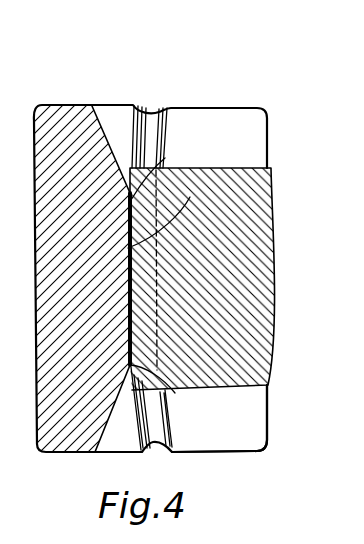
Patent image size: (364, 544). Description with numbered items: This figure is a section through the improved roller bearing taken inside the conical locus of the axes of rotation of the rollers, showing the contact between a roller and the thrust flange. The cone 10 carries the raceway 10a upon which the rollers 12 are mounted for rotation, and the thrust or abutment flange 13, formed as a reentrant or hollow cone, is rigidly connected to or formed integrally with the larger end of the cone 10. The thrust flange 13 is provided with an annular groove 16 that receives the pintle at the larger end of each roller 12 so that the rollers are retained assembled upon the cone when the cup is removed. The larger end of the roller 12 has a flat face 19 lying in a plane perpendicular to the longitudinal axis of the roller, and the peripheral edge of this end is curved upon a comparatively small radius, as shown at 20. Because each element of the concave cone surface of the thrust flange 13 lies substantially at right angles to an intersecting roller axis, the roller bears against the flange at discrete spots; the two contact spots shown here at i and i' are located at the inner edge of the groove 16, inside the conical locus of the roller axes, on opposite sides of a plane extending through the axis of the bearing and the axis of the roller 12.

The cone 10 is at (250, 110).
The raceway of the cone 10a is at (257, 413).
The roller 12 is at (262, 222).
The thrust flange 13 is at (54, 236).
The annular groove 16 is at (107, 124).
The flat face 19 is at (190, 197).
The curved peripheral edge 20 is at (130, 172).
The spot of contact i is at (156, 170).
The spot of contact i' is at (158, 392).